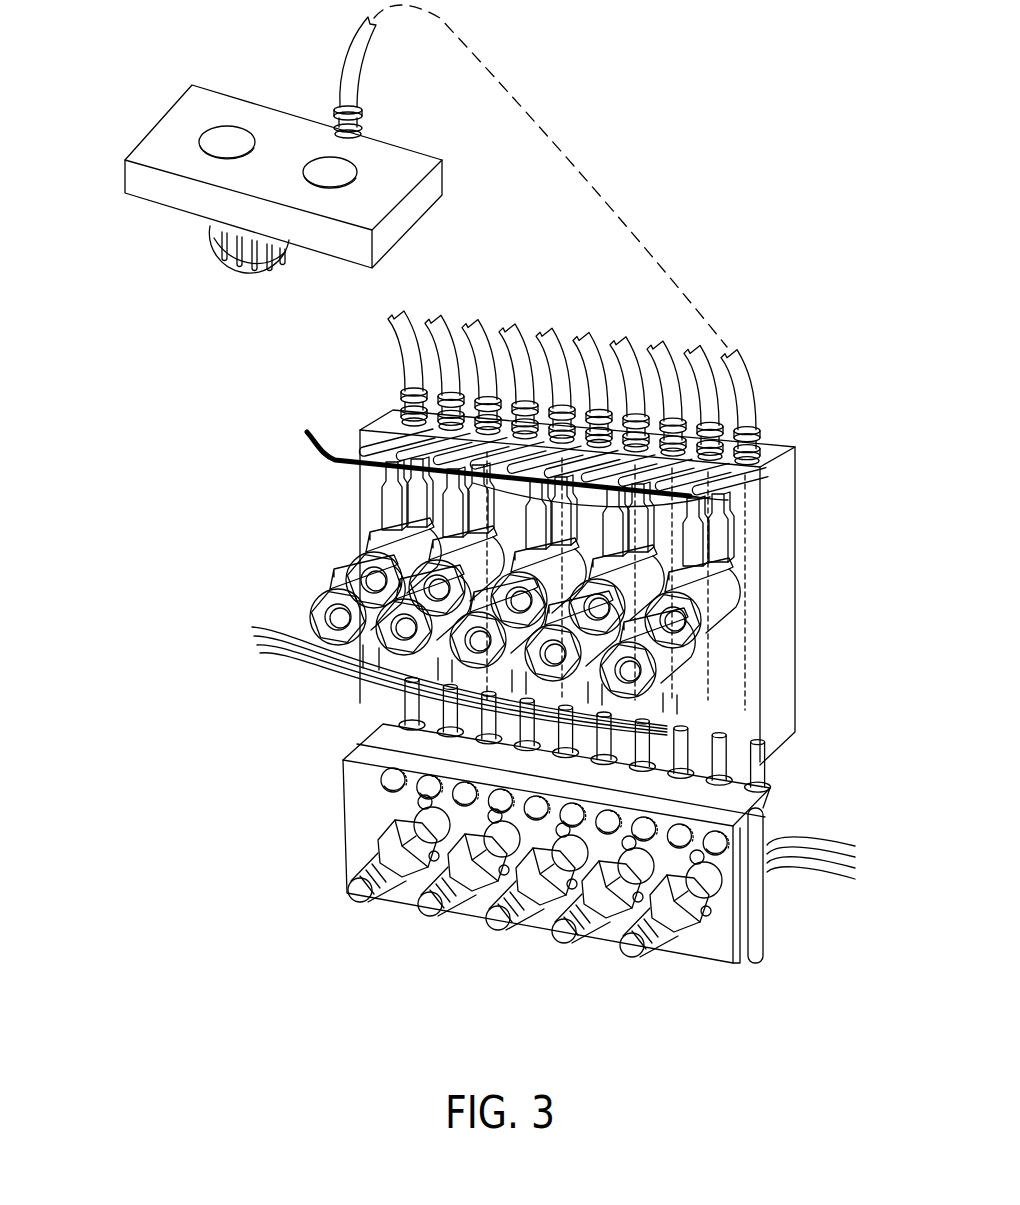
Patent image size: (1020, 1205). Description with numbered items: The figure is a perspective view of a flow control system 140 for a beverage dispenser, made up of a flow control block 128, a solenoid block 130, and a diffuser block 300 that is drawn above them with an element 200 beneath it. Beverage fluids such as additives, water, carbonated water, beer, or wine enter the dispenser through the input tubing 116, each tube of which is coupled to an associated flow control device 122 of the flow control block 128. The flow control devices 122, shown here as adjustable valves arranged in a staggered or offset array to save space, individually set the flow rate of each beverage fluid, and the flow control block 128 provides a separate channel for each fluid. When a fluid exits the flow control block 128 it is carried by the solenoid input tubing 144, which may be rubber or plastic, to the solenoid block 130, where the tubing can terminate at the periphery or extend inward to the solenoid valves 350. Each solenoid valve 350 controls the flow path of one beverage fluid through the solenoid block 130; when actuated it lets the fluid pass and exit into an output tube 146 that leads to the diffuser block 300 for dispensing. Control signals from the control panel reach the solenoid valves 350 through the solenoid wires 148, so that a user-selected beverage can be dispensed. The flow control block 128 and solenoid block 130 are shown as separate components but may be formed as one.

The flow control system 140 is at (724, 46).
The diffuser block 300 is at (162, 188).
The filter cartridge 200 is at (225, 267).
The solenoid block 130 is at (780, 662).
The output tube 146 is at (710, 410).
The solenoid valves 350 is at (693, 645).
The solenoid wires 148 is at (315, 640).
The solenoid input tubing 144 is at (750, 769).
The flow control block 128 is at (757, 908).
The flow control devices 122 is at (657, 947).
The input tubing 116 is at (843, 850).